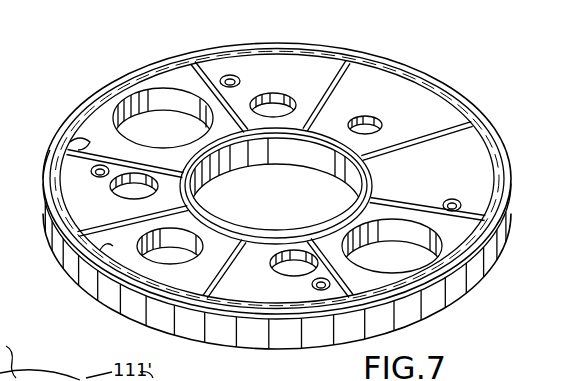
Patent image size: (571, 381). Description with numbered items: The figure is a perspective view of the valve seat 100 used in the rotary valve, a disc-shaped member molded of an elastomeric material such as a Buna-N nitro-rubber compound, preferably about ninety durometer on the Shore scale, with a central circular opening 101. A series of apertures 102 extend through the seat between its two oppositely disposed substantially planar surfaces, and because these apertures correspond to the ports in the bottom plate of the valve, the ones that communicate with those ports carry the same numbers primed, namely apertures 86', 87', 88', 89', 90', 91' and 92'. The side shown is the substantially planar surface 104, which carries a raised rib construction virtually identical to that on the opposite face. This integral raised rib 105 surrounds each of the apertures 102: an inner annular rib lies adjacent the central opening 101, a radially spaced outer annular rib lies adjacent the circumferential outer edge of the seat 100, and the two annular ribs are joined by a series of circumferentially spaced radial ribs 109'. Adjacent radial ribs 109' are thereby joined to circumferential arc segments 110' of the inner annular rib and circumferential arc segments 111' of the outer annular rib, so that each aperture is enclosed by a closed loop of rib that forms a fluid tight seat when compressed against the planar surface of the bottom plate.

The valve seat 100 is at (62, 119).
The central circular opening 101 is at (312, 207).
The apertures 102 is at (285, 110).
The substantially planar surface 104 is at (405, 97).
The raised rib 105 is at (441, 99).
The aperture 86' is at (175, 259).
The aperture 87' is at (271, 93).
The aperture 88' is at (121, 195).
The aperture 89' is at (163, 92).
The aperture 90' is at (392, 224).
The aperture 91' is at (279, 275).
The aperture 92' is at (387, 124).
The radial ribs 109' is at (56, 207).
The circumferential arc segments 110' is at (276, 186).
The circumferential arc segments 111' is at (25, 164).